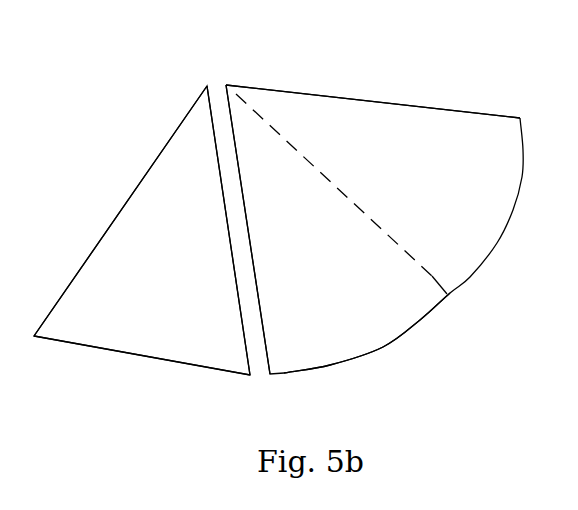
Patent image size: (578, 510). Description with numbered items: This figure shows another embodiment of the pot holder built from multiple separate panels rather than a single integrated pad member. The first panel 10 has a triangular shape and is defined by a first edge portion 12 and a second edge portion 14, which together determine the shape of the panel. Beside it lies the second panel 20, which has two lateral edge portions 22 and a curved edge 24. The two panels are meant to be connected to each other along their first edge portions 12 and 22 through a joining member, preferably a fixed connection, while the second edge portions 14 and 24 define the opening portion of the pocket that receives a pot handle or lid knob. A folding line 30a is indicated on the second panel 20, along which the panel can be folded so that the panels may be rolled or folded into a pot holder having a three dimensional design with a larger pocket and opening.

The first panel 10 is at (171, 278).
The first edge portion 12 is at (120, 208).
The second edge portion 14 is at (140, 357).
The second panel 20 is at (411, 179).
The lateral edge portion 22 is at (430, 108).
The second edge portion 24 is at (390, 345).
The folding line 30a is at (388, 232).